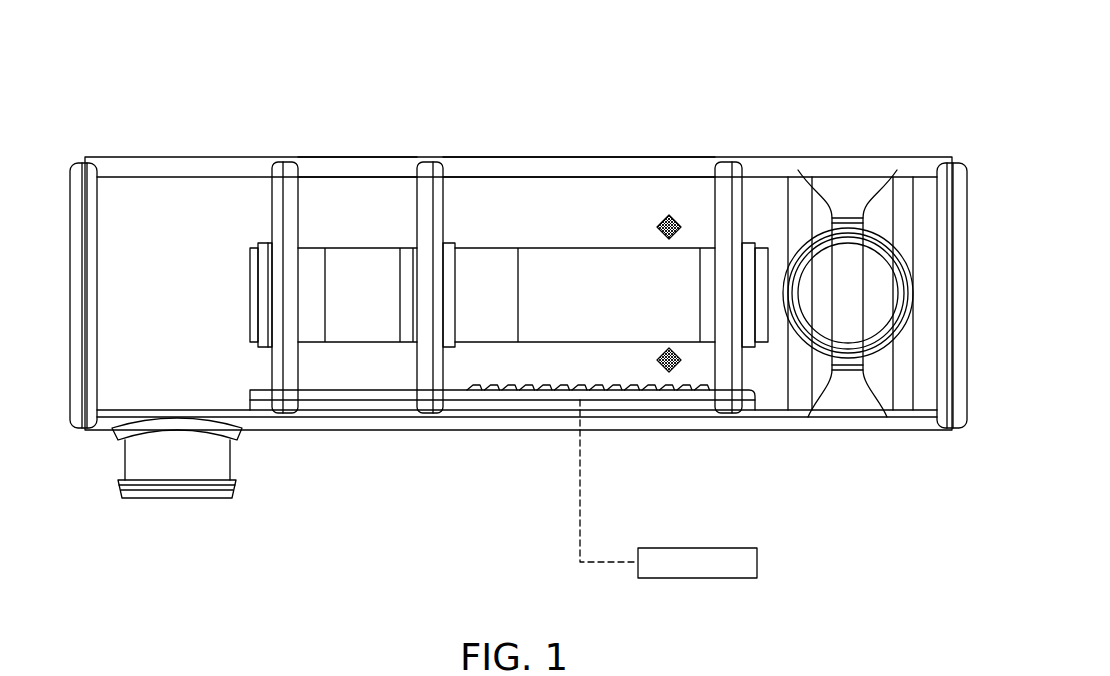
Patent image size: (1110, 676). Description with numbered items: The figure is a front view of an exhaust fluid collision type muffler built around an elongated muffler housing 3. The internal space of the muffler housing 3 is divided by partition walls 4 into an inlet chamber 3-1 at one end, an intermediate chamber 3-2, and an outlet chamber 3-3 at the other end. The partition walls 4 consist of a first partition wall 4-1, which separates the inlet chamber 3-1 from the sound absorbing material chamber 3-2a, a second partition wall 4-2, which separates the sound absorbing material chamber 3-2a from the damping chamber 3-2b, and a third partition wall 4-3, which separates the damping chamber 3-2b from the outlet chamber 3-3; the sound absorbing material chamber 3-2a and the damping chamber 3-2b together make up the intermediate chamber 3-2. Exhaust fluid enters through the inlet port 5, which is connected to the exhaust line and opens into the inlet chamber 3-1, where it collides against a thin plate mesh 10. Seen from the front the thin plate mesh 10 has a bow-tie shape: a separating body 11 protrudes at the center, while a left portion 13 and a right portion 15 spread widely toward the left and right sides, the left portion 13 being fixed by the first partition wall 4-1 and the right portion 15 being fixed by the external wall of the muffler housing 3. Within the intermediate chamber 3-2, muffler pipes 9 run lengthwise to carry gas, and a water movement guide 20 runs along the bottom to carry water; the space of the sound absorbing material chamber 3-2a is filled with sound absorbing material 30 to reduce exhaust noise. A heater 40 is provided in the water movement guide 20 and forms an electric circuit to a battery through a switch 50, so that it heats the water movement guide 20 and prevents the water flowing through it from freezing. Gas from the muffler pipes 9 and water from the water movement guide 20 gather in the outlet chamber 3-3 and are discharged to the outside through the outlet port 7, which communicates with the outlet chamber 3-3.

The muffler housing 3 is at (116, 157).
The inlet chamber 3-1 is at (838, 207).
The intermediate chamber 3-2 is at (506, 100).
The sound absorbing material chamber 3-2a is at (579, 124).
The damping chamber 3-2b is at (362, 200).
The outlet chamber 3-3 is at (165, 200).
The partition walls 4 is at (428, 373).
The first partition wall 4-1 is at (735, 413).
The second partition wall 4-2 is at (425, 405).
The third partition wall 4-3 is at (290, 408).
The inlet port 5 is at (855, 370).
The outlet port 7 is at (142, 460).
The muffler pipes 9 is at (252, 272).
The thin plate mesh 10 is at (859, 272).
The separating body 11 is at (855, 253).
The left portion 13 is at (905, 185).
The right portion 15 is at (802, 187).
The water movement guide 20 is at (470, 403).
The sound absorbing material 30 is at (668, 372).
The heater 40 is at (520, 400).
The switch 50 is at (757, 562).